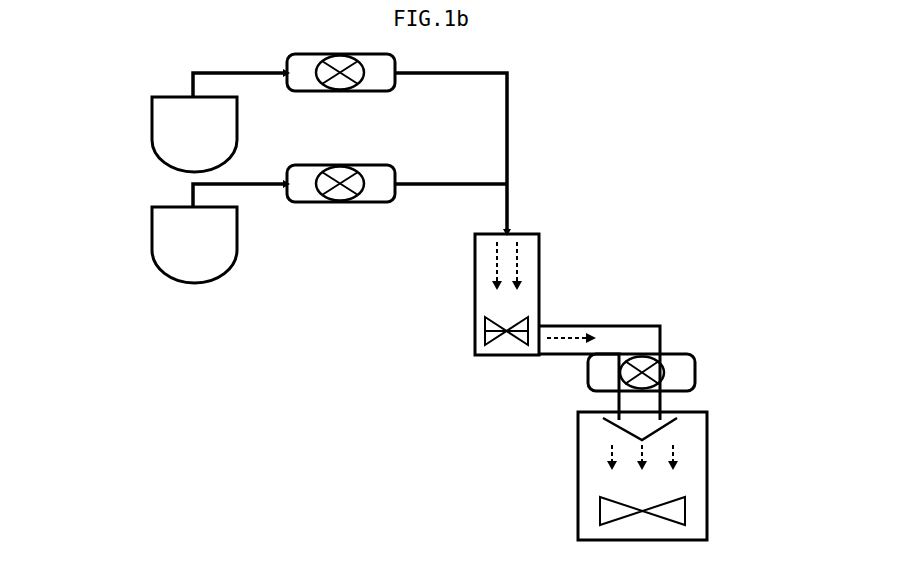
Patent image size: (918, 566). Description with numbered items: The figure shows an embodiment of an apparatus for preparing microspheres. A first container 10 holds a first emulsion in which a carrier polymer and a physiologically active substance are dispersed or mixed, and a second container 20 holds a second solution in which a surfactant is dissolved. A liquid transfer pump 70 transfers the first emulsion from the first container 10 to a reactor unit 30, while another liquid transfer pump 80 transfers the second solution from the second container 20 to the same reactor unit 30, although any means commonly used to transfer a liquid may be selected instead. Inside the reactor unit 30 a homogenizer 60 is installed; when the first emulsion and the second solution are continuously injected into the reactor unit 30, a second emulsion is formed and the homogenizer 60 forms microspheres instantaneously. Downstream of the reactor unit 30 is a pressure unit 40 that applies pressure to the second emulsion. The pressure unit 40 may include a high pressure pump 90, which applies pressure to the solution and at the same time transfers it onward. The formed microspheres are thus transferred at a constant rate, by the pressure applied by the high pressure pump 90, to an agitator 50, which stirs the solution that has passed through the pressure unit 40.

The first container 10 is at (152, 143).
The second container 20 is at (152, 258).
The reactor unit 30 is at (545, 302).
The pressure unit 40 is at (633, 322).
The agitator 50 is at (712, 518).
The homogenizer 60 is at (474, 330).
The liquid transfer pump 70 is at (343, 92).
The liquid transfer pump 80 is at (336, 203).
The high pressure pump 90 is at (700, 372).